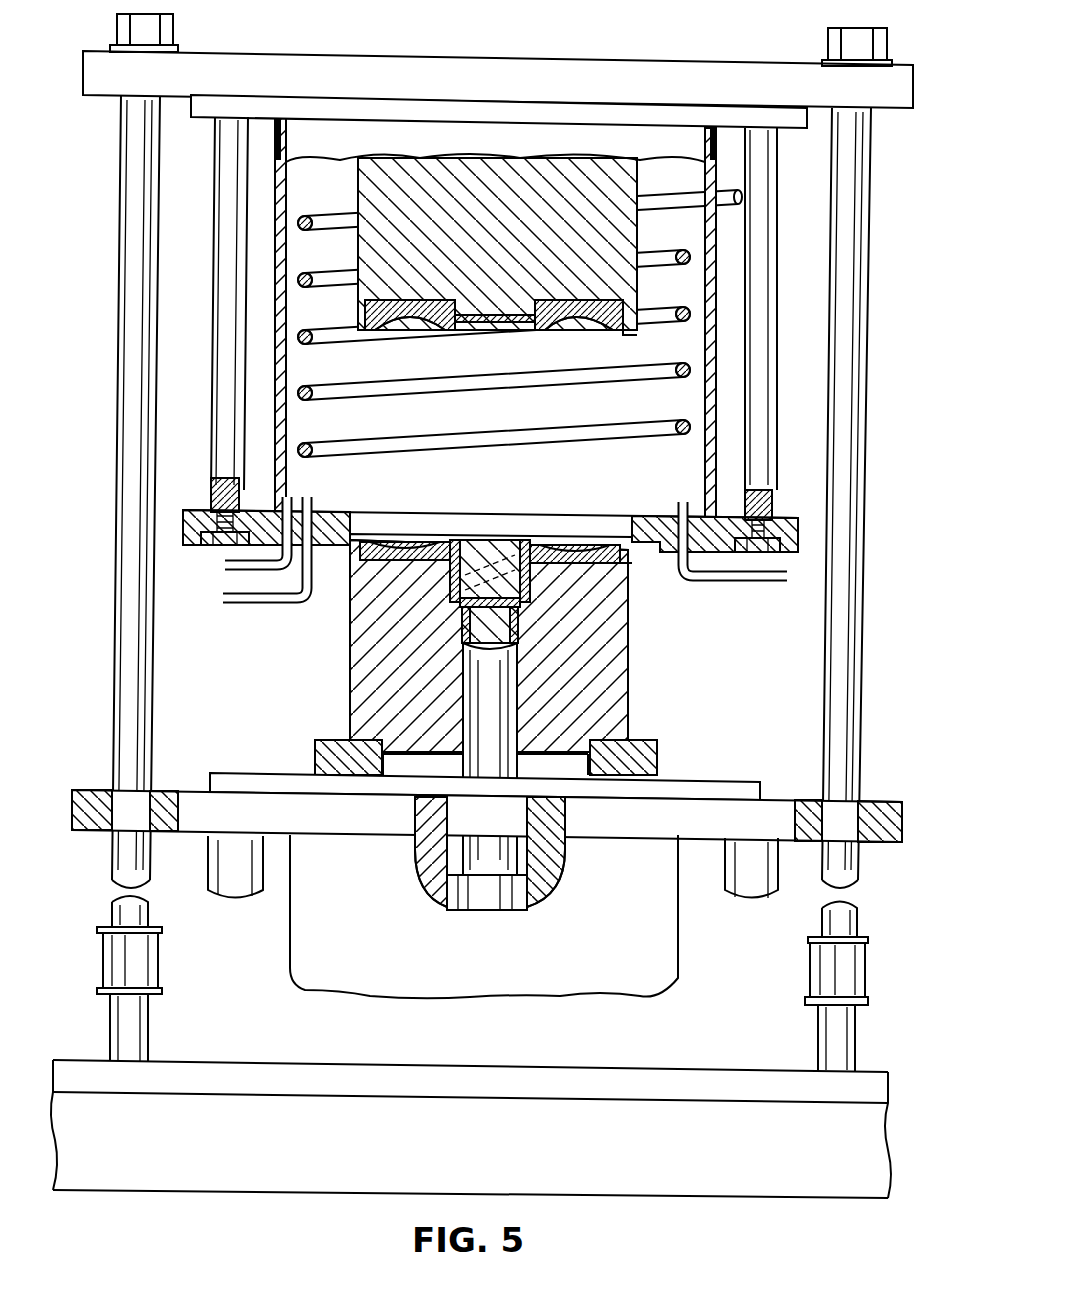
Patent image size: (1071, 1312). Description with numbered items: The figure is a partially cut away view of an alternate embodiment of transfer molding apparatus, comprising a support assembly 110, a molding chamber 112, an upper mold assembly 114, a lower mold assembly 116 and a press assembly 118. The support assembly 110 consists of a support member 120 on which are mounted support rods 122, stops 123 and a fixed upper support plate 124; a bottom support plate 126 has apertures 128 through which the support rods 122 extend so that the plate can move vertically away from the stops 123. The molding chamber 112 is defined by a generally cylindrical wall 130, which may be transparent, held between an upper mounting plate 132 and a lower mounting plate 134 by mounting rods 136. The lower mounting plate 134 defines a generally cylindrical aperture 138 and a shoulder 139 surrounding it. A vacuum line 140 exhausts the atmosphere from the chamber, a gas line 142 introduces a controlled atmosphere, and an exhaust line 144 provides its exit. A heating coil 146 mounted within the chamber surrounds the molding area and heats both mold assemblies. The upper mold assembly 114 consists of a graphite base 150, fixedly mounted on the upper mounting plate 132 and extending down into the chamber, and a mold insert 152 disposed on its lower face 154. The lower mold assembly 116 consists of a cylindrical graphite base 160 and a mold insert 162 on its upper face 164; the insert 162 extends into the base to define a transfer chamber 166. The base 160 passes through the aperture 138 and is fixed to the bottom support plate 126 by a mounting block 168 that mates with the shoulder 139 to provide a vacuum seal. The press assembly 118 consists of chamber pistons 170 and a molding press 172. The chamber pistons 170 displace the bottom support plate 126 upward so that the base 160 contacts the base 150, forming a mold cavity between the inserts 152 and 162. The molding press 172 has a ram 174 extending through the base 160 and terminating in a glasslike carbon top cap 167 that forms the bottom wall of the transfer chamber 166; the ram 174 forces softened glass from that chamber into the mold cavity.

The support assembly 110 is at (172, 1203).
The molding chamber 112 is at (268, 324).
The upper mold assembly 114 is at (352, 187).
The lower mold assembly 116 is at (345, 665).
The press assembly 118 is at (297, 990).
The support member 120 is at (390, 1085).
The support rods 122 is at (112, 1040).
The stops 123 is at (140, 958).
The fixed upper support plate 124 is at (120, 78).
The bottom support plate 126 is at (106, 832).
The apertures 128 is at (118, 788).
The wall 130 is at (720, 243).
The upper mounting plate 132 is at (795, 122).
The lower mounting plate 134 is at (785, 520).
The mounting rods 136 is at (762, 360).
The aperture 138 is at (580, 516).
The shoulder 139 is at (658, 552).
The vacuum line 140 is at (762, 582).
The gas line 142 is at (238, 566).
The exhaust line 144 is at (236, 598).
The heating coil 146 is at (392, 398).
The graphite base 150 is at (625, 240).
The mold insert 152 is at (628, 336).
The lower face 154 is at (632, 338).
The base 160 is at (612, 696).
The mold insert 162 is at (525, 540).
The upper face 164 is at (626, 545).
The transfer chamber 166 is at (478, 540).
The top cap 167 is at (520, 636).
The mounting block 168 is at (658, 748).
The chamber pistons 170 is at (216, 878).
The molding press 172 is at (613, 979).
The ram 174 is at (470, 708).